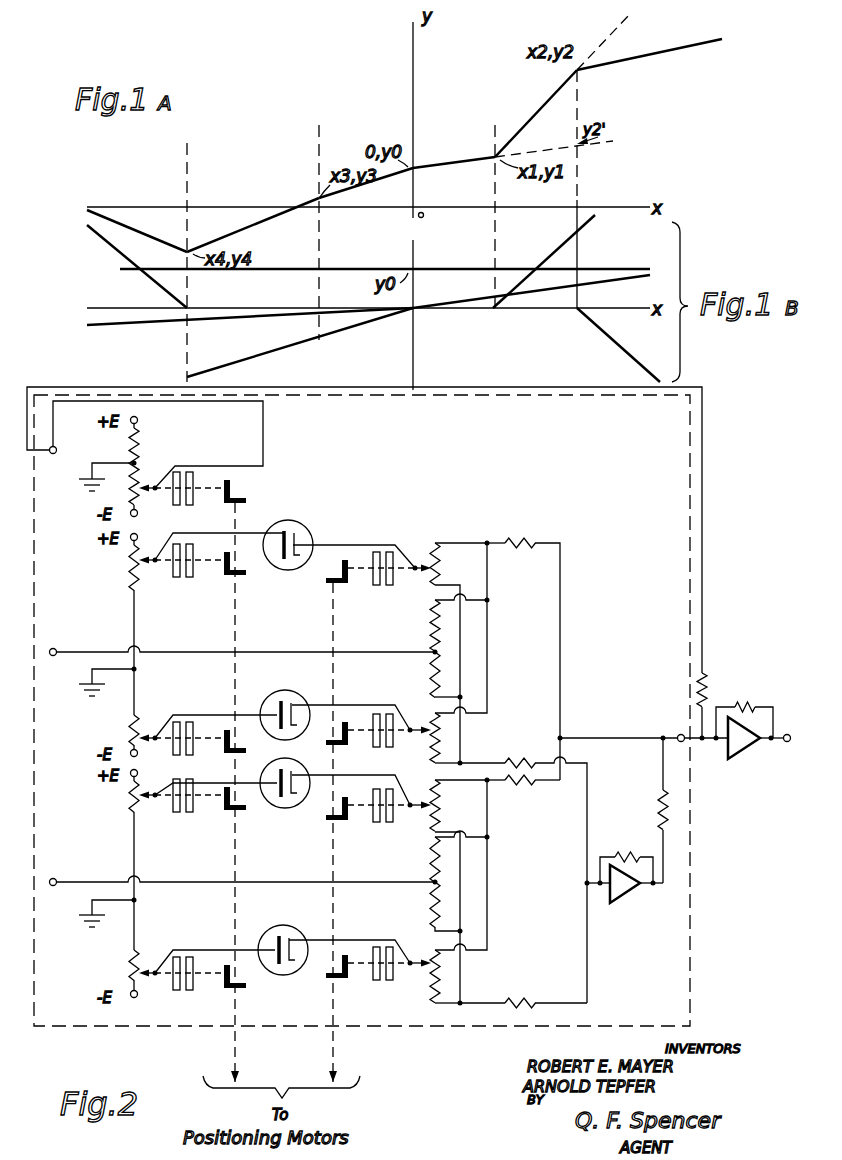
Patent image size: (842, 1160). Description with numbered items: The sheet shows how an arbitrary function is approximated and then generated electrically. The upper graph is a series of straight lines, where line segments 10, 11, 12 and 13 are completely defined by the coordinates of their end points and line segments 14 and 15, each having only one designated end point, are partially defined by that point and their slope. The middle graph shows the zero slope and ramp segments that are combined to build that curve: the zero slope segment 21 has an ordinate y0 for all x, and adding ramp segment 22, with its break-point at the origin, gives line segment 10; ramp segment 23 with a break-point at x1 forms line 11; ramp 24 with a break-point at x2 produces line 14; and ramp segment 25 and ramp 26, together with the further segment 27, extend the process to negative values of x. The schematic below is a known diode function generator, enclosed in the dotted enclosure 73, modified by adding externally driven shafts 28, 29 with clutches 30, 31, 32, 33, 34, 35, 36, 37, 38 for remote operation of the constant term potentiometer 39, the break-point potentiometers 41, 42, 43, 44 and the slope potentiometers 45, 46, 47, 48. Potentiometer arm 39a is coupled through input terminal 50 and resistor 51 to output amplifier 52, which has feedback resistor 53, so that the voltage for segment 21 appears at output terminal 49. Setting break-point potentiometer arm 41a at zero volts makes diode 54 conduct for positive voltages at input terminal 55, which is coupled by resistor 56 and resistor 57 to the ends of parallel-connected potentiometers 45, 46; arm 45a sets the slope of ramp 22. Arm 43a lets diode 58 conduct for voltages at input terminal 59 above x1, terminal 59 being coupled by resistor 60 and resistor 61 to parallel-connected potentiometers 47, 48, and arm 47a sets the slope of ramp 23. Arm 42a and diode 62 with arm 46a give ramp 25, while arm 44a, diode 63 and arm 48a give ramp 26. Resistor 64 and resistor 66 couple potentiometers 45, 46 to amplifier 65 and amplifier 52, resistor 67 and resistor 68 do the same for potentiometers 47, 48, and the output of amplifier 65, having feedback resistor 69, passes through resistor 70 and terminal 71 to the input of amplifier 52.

In FIG. 1A, the line segment 10 is at (426, 156).
In FIG. 1A, the line segment 11 is at (552, 95).
In FIG. 1A, the line segment 12 is at (376, 187).
In FIG. 1A, the line segment 13 is at (270, 226).
In FIG. 1A, the line segment 14 is at (680, 40).
In FIG. 1A, the line segment 15 is at (116, 224).
In FIG. 1B, the zero slope segment 21 is at (418, 268).
In FIG. 1B, the ramp segment 22 is at (462, 310).
In FIG. 1B, the ramp segment 23 is at (549, 252).
In FIG. 1B, the ramp 24 is at (622, 358).
In FIG. 1B, the ramp segment 25 is at (364, 327).
In FIG. 1B, the ramp 26 is at (246, 315).
In FIG. 1B, the slope line segment 27 is at (110, 246).
In FIG. 2, the externally driven shaft 28 is at (238, 1054).
In FIG. 2, the externally driven shaft 29 is at (335, 1052).
In FIG. 2, the clutch 30 is at (194, 498).
In FIG. 2, the clutch 31 is at (194, 570).
In FIG. 2, the clutch 32 is at (394, 578).
In FIG. 2, the clutch 33 is at (193, 741).
In FIG. 2, the clutch 34 is at (391, 731).
In FIG. 2, the clutch 35 is at (192, 800).
In FIG. 2, the clutch 36 is at (390, 811).
In FIG. 2, the clutch 37 is at (190, 986).
In FIG. 2, the clutch 38 is at (390, 981).
In FIG. 2, the constant term potentiometer 39 is at (128, 443).
In FIG. 2, the potentiometer arm 39a is at (147, 480).
In FIG. 2, the break-point potentiometer 41 is at (128, 562).
In FIG. 2, the break-point potentiometer arm 41a is at (152, 568).
In FIG. 2, the break-point potentiometer 42 is at (126, 729).
In FIG. 2, the potentiometer arm 42a is at (146, 734).
In FIG. 2, the break-point potentiometer 43 is at (126, 797).
In FIG. 2, the potentiometer arm 43a is at (151, 802).
In FIG. 2, the break-point potentiometer 44 is at (126, 967).
In FIG. 2, the potentiometer arm 44a is at (144, 970).
In FIG. 2, the slope potentiometer 45 is at (443, 567).
In FIG. 2, the slope potentiometer arm 45a is at (418, 560).
In FIG. 2, the slope potentiometer 46 is at (428, 747).
In FIG. 2, the potentiometer arm 46a is at (422, 722).
In FIG. 2, the slope potentiometer 47 is at (443, 802).
In FIG. 2, the potentiometer arm 47a is at (422, 799).
In FIG. 2, the slope potentiometer 48 is at (426, 998).
In FIG. 2, the slope potentiometer arm 48a is at (419, 954).
In FIG. 2, the output terminal 49 is at (786, 751).
In FIG. 2, the function generator input terminal 50 is at (54, 445).
In FIG. 2, the resistor 51 is at (708, 676).
In FIG. 2, the output amplifier 52 is at (746, 752).
In FIG. 2, the feedback resistor 53 is at (738, 700).
In FIG. 2, the diode 54 is at (272, 568).
In FIG. 2, the input terminal 55 is at (55, 648).
In FIG. 2, the resistor 56 is at (428, 628).
In FIG. 2, the resistor 57 is at (428, 672).
In FIG. 2, the diode 58 is at (269, 808).
In FIG. 2, the input terminal 59 is at (55, 880).
In FIG. 2, the resistor 60 is at (428, 857).
In FIG. 2, the resistor 61 is at (428, 897).
In FIG. 2, the diode 62 is at (262, 698).
In FIG. 2, the diode 63 is at (272, 978).
In FIG. 2, the resistor 64 is at (509, 760).
In FIG. 2, the amplifier 65 is at (626, 898).
In FIG. 2, the resistor 66 is at (519, 539).
In FIG. 2, the resistor 67 is at (517, 994).
In FIG. 2, the resistor 68 is at (524, 784).
In FIG. 2, the feedback resistor 69 is at (625, 852).
In FIG. 2, the resistor 70 is at (657, 815).
In FIG. 2, the terminal 71 is at (680, 736).
In FIG. 2, the dotted enclosure 73 is at (690, 466).